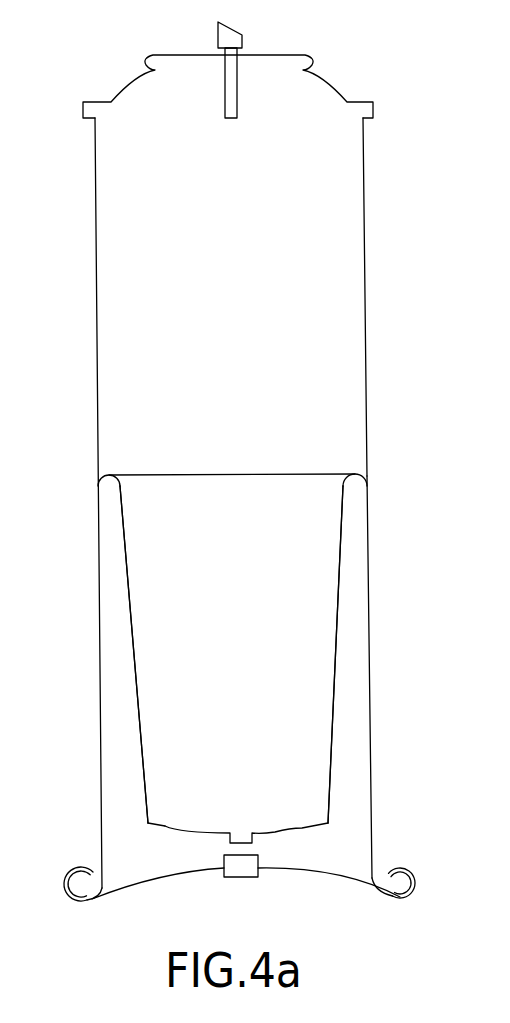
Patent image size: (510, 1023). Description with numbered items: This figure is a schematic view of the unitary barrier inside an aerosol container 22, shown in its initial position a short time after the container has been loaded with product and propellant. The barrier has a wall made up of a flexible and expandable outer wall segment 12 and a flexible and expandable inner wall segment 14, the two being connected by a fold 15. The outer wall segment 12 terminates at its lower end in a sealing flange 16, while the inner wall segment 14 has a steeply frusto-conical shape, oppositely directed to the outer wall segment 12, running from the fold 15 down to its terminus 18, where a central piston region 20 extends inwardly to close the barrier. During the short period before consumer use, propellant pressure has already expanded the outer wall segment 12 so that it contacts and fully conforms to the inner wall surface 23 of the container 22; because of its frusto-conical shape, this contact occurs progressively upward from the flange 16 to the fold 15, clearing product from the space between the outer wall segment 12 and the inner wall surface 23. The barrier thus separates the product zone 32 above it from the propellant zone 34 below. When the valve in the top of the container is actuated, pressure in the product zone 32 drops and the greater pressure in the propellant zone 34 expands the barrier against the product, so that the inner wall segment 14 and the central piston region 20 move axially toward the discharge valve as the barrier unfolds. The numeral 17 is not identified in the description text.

The outer wall segment 12 is at (129, 678).
The inner wall segment 14 is at (128, 553).
The fold 15 is at (106, 482).
The sealing flange 16 is at (418, 882).
The outer wall 17 is at (370, 690).
The terminus 18 is at (147, 824).
The central piston region 20 is at (187, 833).
The container 22 is at (387, 342).
The inner wall surface 23 is at (362, 308).
The product zone 32 is at (165, 240).
The propellant zone 34 is at (337, 864).